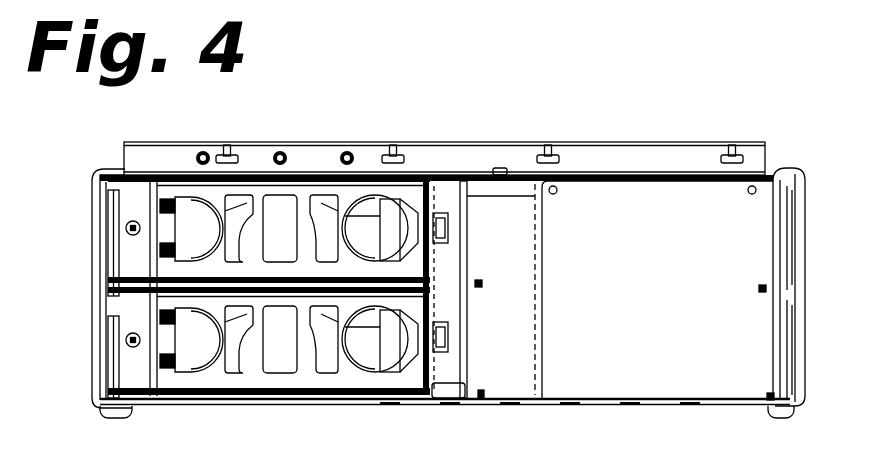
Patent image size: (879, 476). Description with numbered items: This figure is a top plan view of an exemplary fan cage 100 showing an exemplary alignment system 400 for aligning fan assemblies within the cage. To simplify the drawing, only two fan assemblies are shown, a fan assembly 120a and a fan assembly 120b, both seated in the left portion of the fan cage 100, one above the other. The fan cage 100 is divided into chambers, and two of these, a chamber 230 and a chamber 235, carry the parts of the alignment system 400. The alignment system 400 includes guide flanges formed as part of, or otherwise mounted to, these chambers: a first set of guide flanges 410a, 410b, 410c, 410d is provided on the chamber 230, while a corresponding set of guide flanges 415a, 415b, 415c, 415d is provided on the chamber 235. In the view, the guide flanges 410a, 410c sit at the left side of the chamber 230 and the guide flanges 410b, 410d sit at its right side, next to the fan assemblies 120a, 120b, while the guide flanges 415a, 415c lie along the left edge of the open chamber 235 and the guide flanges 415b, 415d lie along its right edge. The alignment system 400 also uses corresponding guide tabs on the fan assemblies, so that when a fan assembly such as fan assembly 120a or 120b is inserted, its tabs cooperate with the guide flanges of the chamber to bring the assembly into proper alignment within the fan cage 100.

The fan cage 100 is at (738, 141).
The fan assembly 120a is at (299, 175).
The fan assembly 120b is at (287, 404).
The chamber 230 is at (408, 196).
The chamber 235 is at (643, 208).
The alignment system 400 is at (527, 419).
The guide flange 410a is at (125, 287).
The guide flange 410b is at (435, 272).
The guide flange 410c is at (123, 394).
The guide flange 410d is at (437, 374).
The guide flange 415a is at (482, 287).
The guide flange 415b is at (762, 287).
The guide flange 415c is at (486, 394).
The guide flange 415d is at (770, 397).